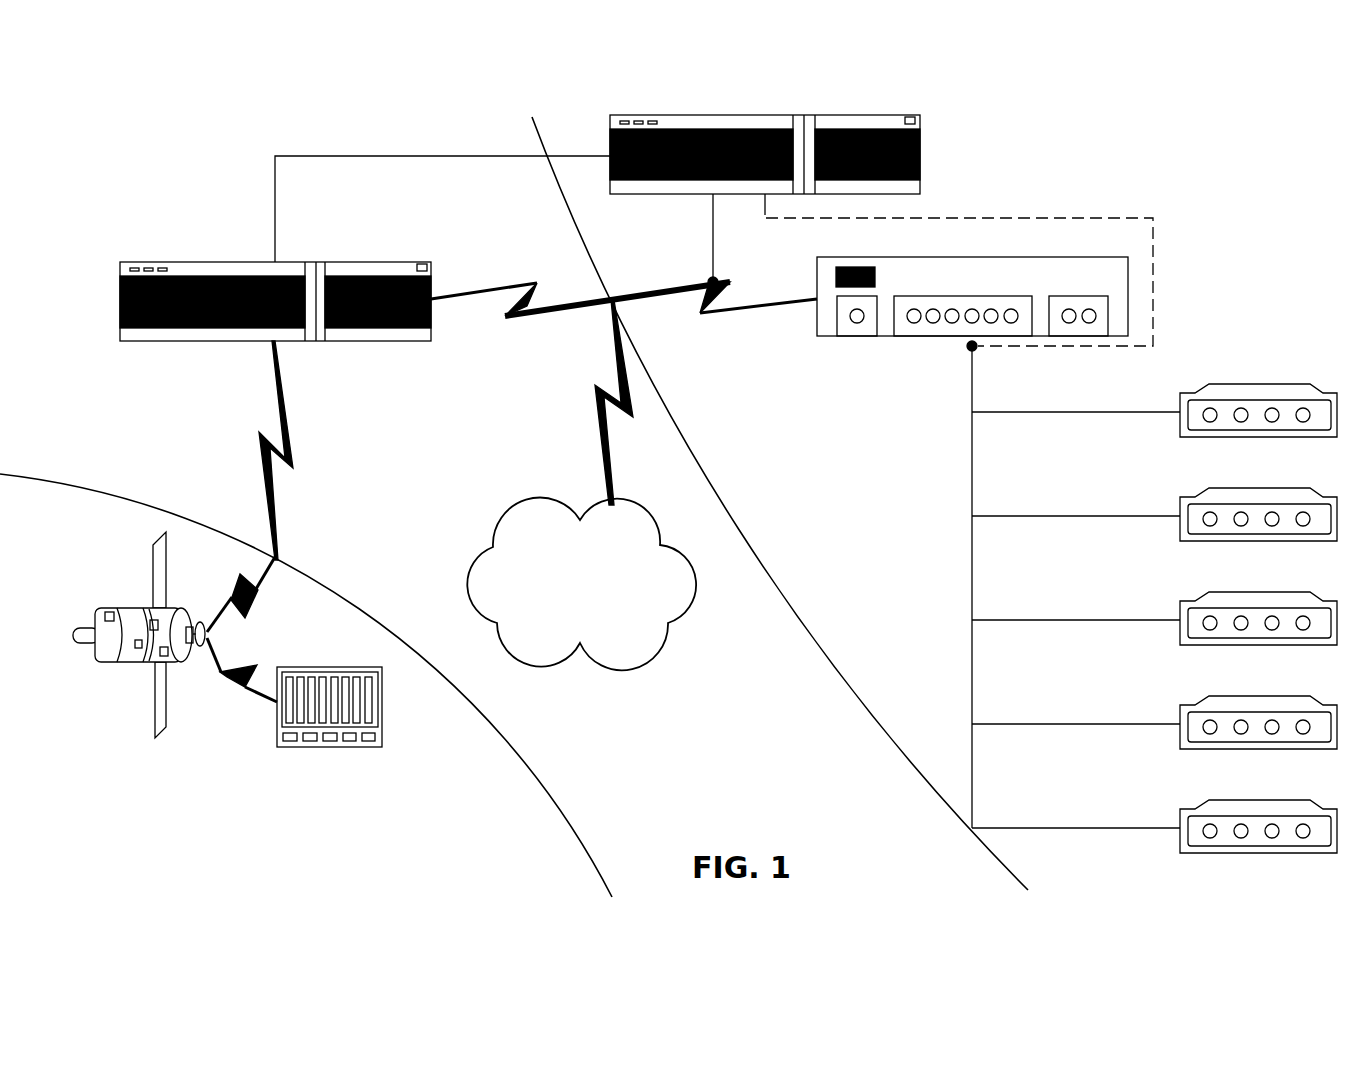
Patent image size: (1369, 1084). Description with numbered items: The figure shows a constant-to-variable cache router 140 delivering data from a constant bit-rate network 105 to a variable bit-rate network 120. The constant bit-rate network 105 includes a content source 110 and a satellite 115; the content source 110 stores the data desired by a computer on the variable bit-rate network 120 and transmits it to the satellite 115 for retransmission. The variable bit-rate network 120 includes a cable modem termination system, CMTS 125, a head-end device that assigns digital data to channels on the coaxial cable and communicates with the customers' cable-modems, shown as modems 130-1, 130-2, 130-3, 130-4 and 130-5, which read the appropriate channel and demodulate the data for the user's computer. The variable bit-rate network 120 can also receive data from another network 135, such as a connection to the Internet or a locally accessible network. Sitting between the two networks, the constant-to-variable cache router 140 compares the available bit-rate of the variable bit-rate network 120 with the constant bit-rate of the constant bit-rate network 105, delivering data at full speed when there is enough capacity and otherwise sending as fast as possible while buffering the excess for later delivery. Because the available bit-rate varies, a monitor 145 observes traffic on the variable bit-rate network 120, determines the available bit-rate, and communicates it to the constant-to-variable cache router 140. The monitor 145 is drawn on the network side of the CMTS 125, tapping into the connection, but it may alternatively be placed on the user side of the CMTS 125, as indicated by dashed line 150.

The constant bit-rate network 105 is at (362, 530).
The content source 110 is at (317, 747).
The satellite 115 is at (118, 605).
The variable bit-rate network 120 is at (782, 690).
The cable modem termination system (CMTS) 125 is at (857, 257).
The modem 130-1 is at (1195, 393).
The modem 130-2 is at (1195, 497).
The modem 130-3 is at (1195, 601).
The modem 130-4 is at (1195, 705).
The modem 130-5 is at (1195, 809).
The network 135 is at (540, 503).
The constant-to-variable cache router 140 is at (158, 262).
The monitor 145 is at (652, 115).
The dashed line 150 is at (1110, 217).